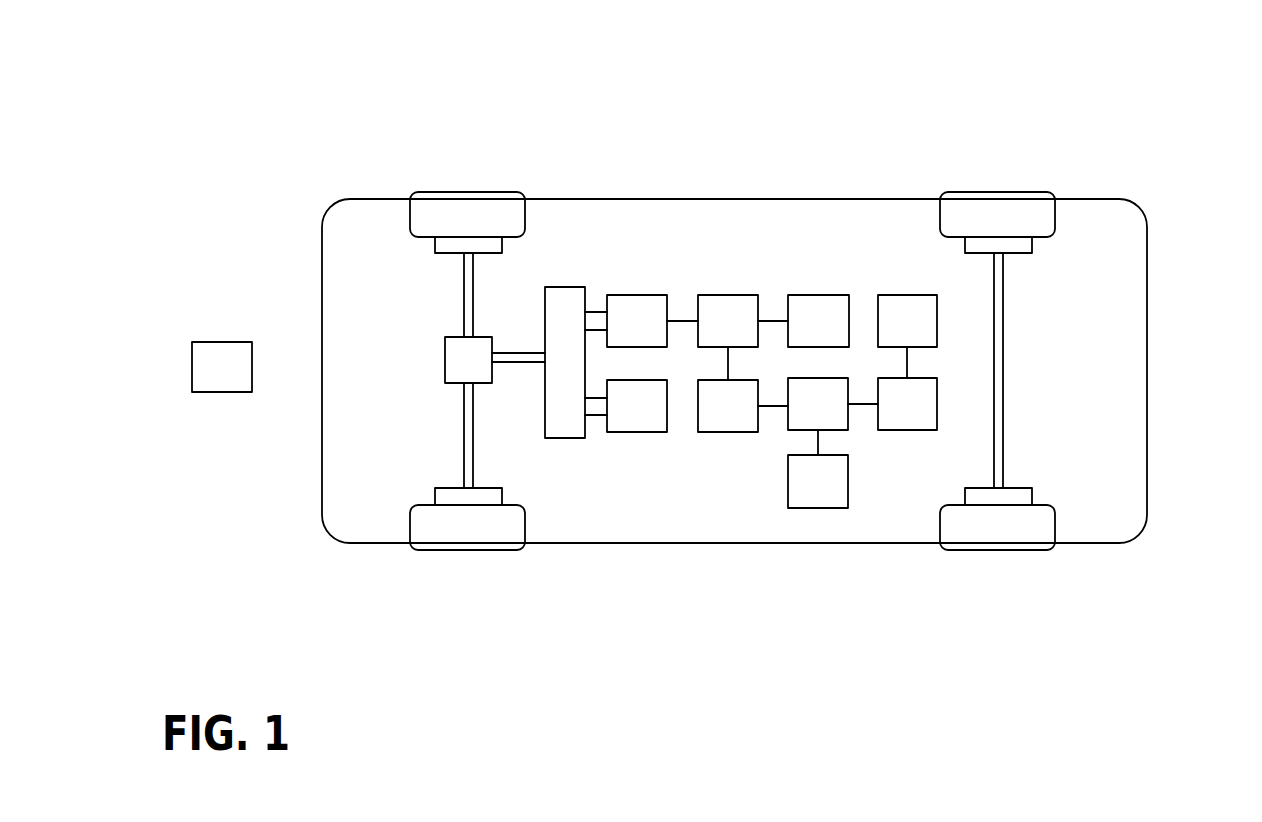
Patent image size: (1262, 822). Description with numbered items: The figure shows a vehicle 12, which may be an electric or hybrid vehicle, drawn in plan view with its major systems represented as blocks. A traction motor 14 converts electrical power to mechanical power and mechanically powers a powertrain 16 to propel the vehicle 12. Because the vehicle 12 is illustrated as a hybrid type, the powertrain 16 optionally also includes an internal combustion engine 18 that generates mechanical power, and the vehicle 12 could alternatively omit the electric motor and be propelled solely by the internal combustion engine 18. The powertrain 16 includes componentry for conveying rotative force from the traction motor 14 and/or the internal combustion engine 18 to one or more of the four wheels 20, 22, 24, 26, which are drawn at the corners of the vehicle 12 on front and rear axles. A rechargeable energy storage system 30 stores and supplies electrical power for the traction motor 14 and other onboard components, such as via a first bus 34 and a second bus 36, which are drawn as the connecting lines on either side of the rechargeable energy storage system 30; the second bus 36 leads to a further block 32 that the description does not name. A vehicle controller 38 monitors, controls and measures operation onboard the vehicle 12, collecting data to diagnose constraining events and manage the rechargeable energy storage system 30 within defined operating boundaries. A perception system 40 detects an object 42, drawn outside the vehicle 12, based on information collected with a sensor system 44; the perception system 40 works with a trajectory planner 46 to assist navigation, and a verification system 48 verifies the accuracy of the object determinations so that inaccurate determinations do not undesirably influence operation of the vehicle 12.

The vehicle 12 is at (1153, 110).
The traction motor 14 is at (637, 321).
The powertrain 16 is at (522, 312).
The internal combustion engine 18 is at (637, 406).
The wheel 20 is at (483, 192).
The wheel 22 is at (1013, 192).
The wheel 24 is at (482, 550).
The wheel 26 is at (1000, 550).
The rechargeable energy storage system 30 is at (728, 321).
The traction battery 32 is at (818, 321).
The first bus 34 is at (682, 320).
The second bus 36 is at (779, 320).
The vehicle controller 38 is at (728, 406).
The perception system 40 is at (818, 404).
The object 42 is at (222, 367).
The sensor system 44 is at (907, 404).
The trajectory planner 46 is at (907, 321).
The verification system 48 is at (818, 481).